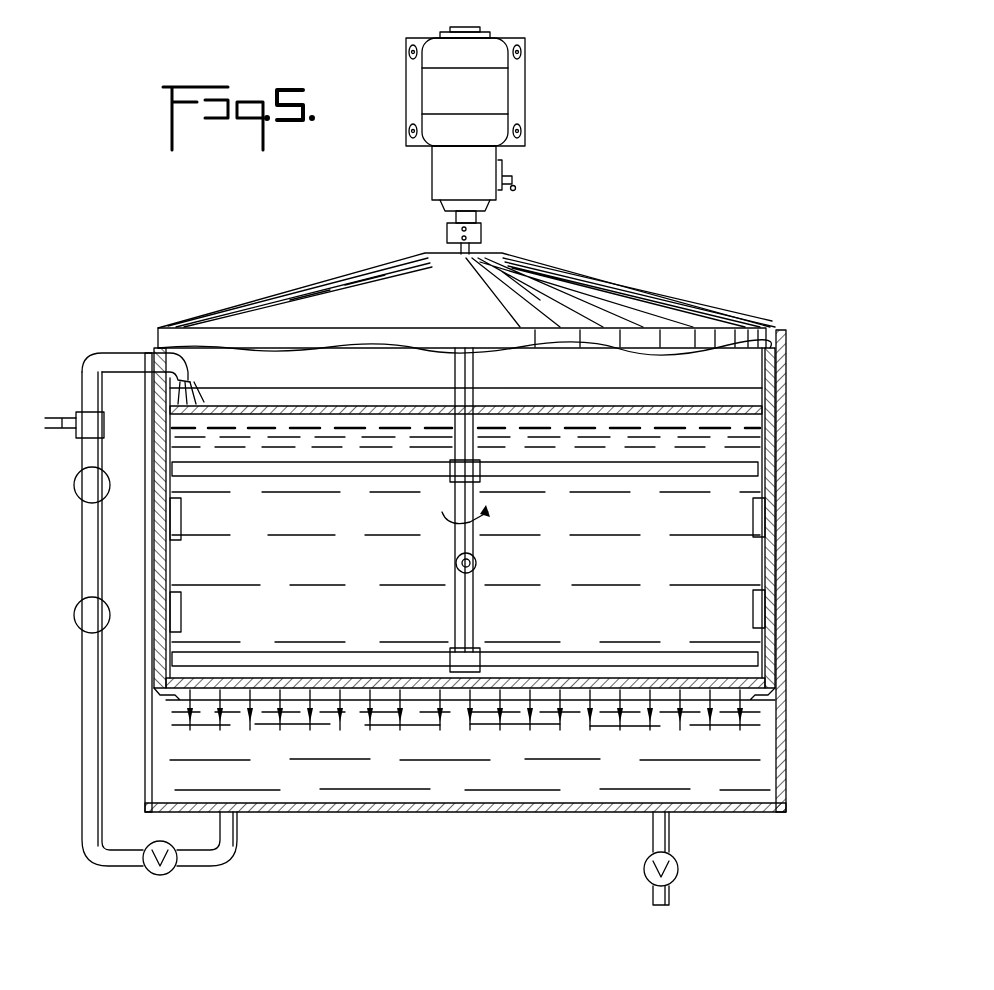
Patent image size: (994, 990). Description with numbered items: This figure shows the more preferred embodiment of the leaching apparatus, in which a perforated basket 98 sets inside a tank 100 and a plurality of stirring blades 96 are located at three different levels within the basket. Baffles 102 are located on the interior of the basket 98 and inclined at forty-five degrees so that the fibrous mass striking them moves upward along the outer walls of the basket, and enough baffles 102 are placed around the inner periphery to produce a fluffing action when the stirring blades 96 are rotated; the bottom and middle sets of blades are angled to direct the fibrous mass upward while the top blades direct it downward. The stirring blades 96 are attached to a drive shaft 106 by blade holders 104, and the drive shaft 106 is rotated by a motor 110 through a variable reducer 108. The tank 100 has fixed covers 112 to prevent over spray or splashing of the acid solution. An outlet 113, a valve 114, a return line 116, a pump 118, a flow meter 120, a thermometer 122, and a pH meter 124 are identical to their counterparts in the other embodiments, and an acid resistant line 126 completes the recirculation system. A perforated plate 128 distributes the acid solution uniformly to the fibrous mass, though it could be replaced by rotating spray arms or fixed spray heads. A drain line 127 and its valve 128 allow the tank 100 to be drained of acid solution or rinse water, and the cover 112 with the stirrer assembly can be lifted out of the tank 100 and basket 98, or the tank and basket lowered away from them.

The stirring blades 96 is at (266, 478).
The perforated basket 98 is at (778, 634).
The tank 100 is at (786, 708).
The baffles 102 is at (170, 610).
The blade holders 104 is at (452, 470).
The drive shaft 106 is at (455, 372).
The variable reducer 108 is at (432, 178).
The motor 110 is at (487, 50).
The fixed covers 112 is at (378, 290).
The outlet 113 is at (232, 838).
The valve 114 is at (156, 876).
The return line 116 is at (82, 553).
The pump 118 is at (74, 615).
The flow meter 120 is at (76, 500).
The thermometer 122 is at (62, 436).
The pH meter 124 is at (60, 416).
The acid resistant line 126 is at (118, 355).
The drain line 127 is at (653, 832).
The perforated plate 128 is at (650, 404).